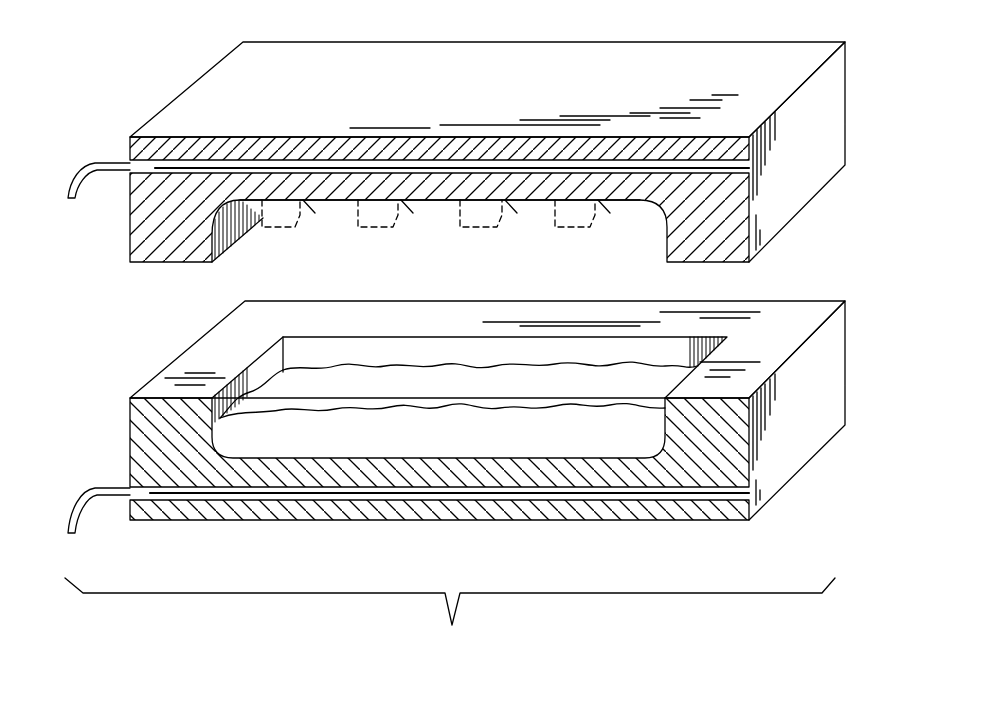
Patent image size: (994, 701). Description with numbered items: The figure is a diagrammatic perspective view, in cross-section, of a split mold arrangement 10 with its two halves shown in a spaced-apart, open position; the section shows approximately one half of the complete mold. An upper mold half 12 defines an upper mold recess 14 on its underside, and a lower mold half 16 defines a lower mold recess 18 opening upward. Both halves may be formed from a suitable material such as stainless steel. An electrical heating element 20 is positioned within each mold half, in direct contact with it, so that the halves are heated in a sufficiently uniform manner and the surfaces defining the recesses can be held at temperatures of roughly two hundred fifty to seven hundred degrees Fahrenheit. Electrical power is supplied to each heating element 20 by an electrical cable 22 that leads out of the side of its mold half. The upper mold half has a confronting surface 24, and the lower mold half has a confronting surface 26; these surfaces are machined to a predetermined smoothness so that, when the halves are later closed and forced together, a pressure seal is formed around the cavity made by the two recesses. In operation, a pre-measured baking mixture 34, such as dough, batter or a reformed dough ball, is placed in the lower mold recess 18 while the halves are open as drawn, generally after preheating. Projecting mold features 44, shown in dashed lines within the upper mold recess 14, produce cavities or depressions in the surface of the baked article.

The split mold arrangement 10 is at (159, 76).
The upper mold half 12 is at (690, 42).
The upper mold recess 14 is at (432, 210).
The lower mold half 16 is at (770, 500).
The lower mold recess 18 is at (498, 352).
The electrical heating element 20 is at (130, 173).
The electrical cable 22 is at (110, 160).
The confronting surface 24 is at (780, 229).
The confronting surface 26 is at (788, 313).
The baking mixture 34 is at (577, 367).
The projecting mold features 44 is at (272, 228).